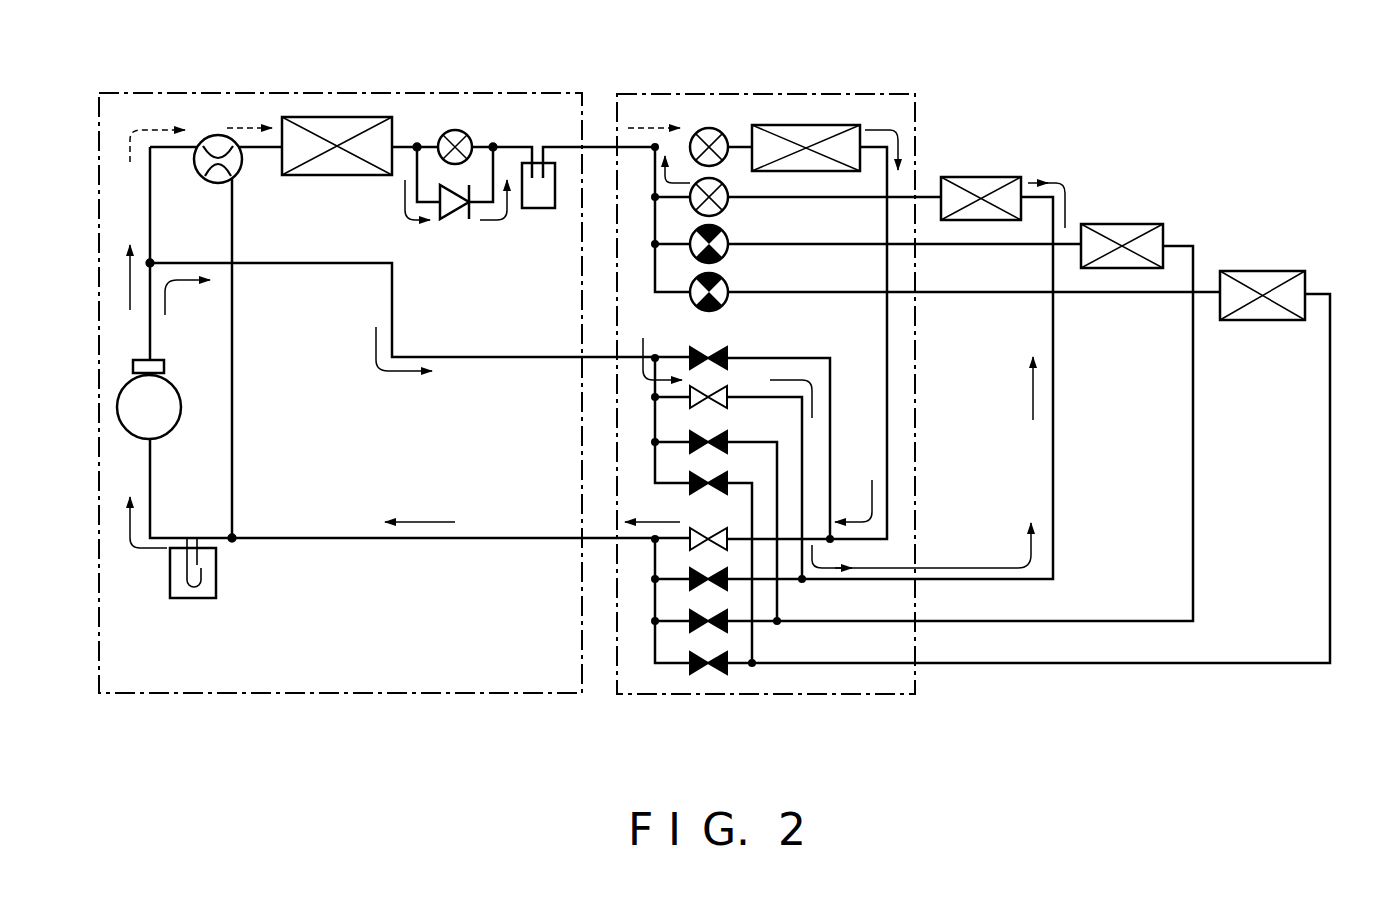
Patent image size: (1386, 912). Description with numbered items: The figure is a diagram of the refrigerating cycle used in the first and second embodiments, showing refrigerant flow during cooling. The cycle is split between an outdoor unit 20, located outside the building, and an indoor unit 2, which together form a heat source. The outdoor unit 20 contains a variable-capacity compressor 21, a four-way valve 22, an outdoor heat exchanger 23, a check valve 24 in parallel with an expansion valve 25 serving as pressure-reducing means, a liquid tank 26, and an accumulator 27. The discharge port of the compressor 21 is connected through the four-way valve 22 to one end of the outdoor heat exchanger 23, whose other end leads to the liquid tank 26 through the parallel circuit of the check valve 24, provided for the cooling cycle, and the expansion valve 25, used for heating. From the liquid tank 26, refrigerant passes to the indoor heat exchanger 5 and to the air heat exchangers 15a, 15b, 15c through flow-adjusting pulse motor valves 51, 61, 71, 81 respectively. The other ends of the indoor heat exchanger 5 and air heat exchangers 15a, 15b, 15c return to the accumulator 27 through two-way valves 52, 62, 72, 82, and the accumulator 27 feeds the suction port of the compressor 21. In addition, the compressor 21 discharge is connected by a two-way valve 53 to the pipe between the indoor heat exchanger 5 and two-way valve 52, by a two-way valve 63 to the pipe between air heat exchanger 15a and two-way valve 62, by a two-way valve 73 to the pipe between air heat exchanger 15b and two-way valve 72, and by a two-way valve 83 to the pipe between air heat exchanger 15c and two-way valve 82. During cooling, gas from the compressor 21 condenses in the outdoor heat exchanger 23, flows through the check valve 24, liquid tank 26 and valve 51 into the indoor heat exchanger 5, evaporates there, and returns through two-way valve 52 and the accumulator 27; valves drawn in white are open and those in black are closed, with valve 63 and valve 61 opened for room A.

The indoor unit 2 is at (663, 93).
The indoor heat exchanger 5 is at (820, 125).
The air heat exchanger 15a is at (998, 176).
The air heat exchanger 15b is at (1137, 224).
The air heat exchanger 15c is at (1278, 271).
The outdoor unit 20 is at (415, 93).
The variable-capacity compressor 21 is at (178, 400).
The four-way valve 22 is at (206, 178).
The outdoor heat exchanger 23 is at (357, 117).
The check valve 24 is at (447, 212).
The expansion valve 25 is at (470, 137).
The liquid tank 26 is at (540, 208).
The accumulator 27 is at (216, 575).
The flow-adjusting valve (PMV) 51 is at (718, 128).
The two-way valve 52 is at (690, 545).
The two-way valve 53 is at (697, 350).
The flow-adjusting valve (PMV) 61 is at (725, 205).
The two-way valve 62 is at (690, 586).
The two-way valve 63 is at (718, 397).
The flow-adjusting valve (PMV) 71 is at (725, 251).
The two-way valve 72 is at (690, 628).
The two-way valve 73 is at (722, 445).
The flow-adjusting valve (PMV) 81 is at (725, 299).
The two-way valve 82 is at (700, 674).
The two-way valve 83 is at (690, 495).